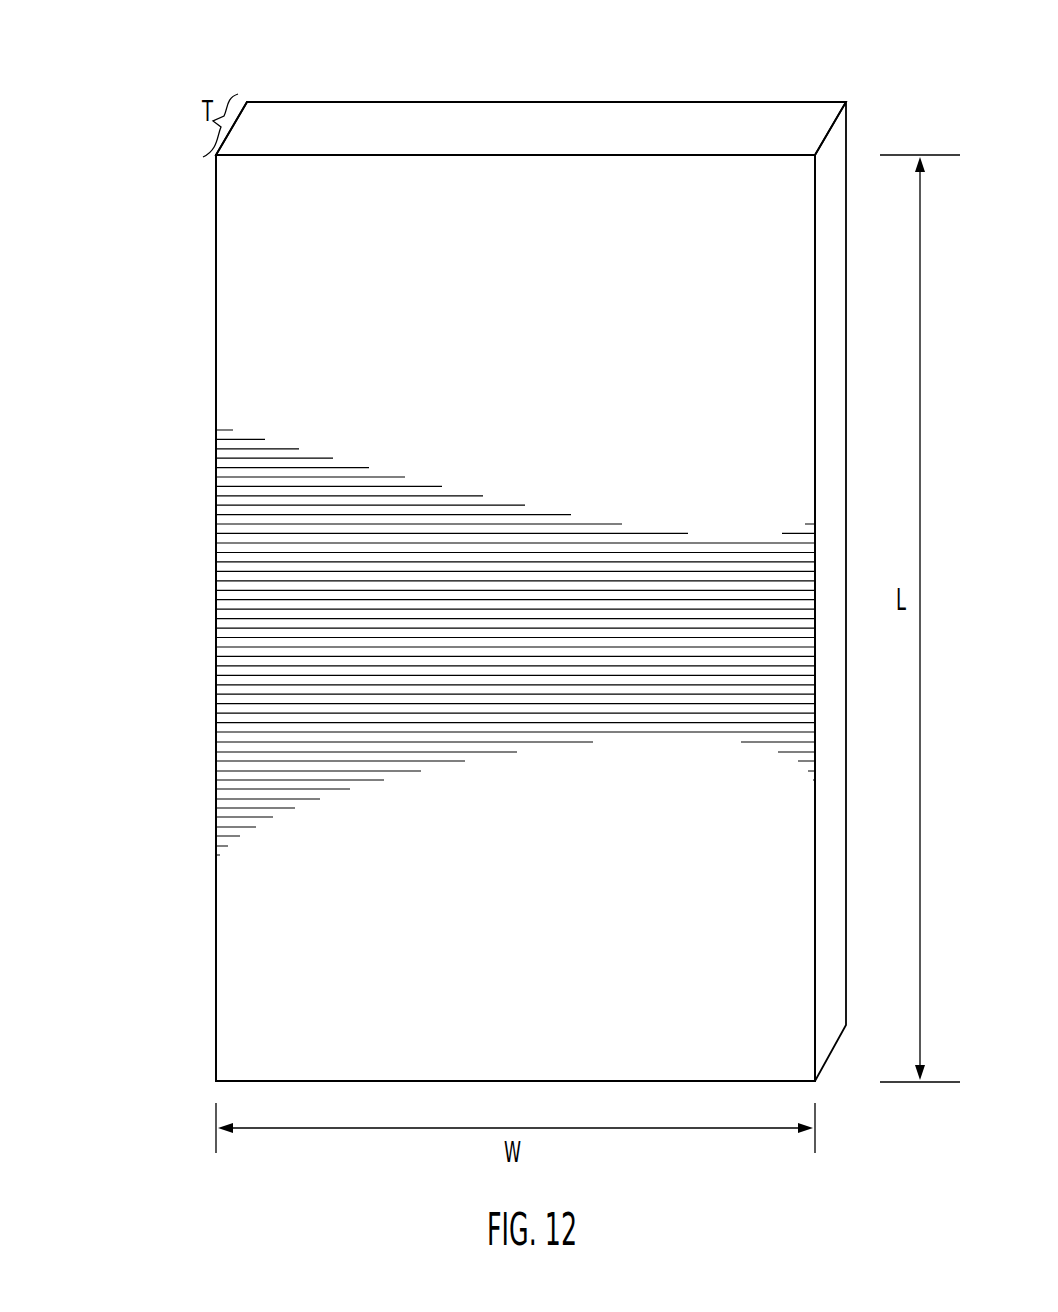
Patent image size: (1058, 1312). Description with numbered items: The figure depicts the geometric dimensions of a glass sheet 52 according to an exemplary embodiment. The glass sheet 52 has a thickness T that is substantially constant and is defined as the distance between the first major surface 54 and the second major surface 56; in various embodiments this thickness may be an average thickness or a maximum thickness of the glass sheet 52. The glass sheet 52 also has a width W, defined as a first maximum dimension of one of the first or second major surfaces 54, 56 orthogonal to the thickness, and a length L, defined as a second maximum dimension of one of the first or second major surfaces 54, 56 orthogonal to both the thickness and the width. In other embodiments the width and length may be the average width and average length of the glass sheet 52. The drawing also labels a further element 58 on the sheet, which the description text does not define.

The glass sheet 52 is at (444, 542).
The first major surface 54 is at (540, 441).
The second major surface 56 is at (528, 98).
The top surface 58 is at (705, 135).